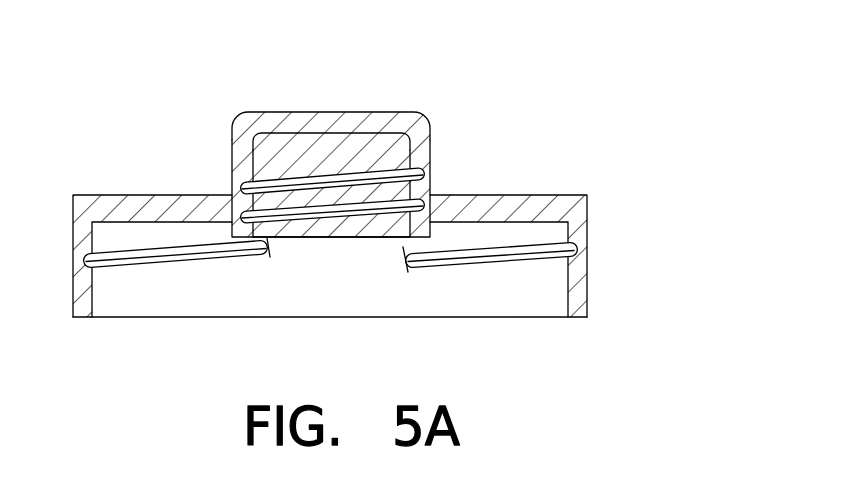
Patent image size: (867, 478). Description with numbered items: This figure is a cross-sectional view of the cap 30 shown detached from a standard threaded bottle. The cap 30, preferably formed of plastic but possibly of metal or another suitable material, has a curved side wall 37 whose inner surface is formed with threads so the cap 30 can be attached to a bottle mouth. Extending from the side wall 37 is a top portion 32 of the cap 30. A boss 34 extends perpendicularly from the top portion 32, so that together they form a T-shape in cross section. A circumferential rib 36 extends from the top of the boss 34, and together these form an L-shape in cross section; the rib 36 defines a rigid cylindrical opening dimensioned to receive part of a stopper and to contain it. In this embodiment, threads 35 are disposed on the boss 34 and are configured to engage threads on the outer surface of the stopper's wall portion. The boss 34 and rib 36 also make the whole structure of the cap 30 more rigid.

The cap 30 is at (412, 162).
The top portion 32 is at (137, 200).
The boss 34 is at (420, 152).
The threads 35 is at (322, 176).
The circumferential rib 36 is at (403, 113).
The curved side wall 37 is at (578, 291).